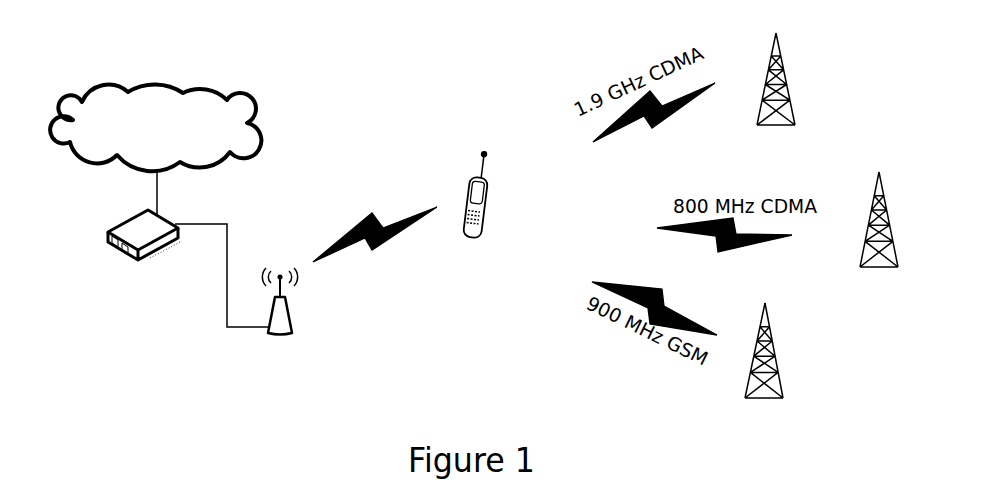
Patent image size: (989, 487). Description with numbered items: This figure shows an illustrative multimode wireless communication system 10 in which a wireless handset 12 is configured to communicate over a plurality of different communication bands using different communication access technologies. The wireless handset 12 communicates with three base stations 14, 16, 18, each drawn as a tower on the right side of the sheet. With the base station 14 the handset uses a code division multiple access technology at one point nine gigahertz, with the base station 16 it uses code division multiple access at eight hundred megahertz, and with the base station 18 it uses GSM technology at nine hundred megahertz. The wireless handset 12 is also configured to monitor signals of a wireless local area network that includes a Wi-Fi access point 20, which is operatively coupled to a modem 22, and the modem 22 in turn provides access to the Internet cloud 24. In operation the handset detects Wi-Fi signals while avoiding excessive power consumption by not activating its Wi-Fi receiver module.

The illustrative system 10 is at (473, 100).
The wireless handset 12 is at (463, 202).
The base station 14 is at (783, 80).
The base station 16 is at (885, 198).
The base station 18 is at (773, 348).
The Wi-Fi access point 20 is at (291, 318).
The modem 22 is at (112, 231).
The Internet cloud 24 is at (143, 83).